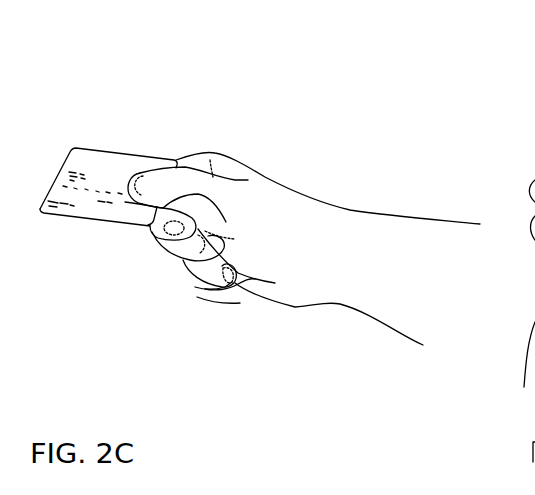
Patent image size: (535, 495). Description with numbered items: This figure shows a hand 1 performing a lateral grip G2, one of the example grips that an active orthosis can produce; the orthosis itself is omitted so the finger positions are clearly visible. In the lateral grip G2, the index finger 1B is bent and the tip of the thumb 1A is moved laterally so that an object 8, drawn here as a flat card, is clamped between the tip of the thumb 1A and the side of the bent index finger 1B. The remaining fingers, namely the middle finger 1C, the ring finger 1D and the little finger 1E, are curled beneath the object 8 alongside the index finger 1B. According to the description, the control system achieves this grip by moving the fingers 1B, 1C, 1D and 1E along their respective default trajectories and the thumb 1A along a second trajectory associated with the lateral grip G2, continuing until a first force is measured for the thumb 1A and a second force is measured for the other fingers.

The hand 1 is at (222, 152).
The thumb 1A is at (167, 180).
The index finger 1B is at (153, 231).
The middle finger 1C is at (177, 248).
The ring finger 1D is at (200, 273).
The little finger 1E is at (213, 293).
The object 8 is at (100, 164).
The lateral grip G2 is at (315, 140).